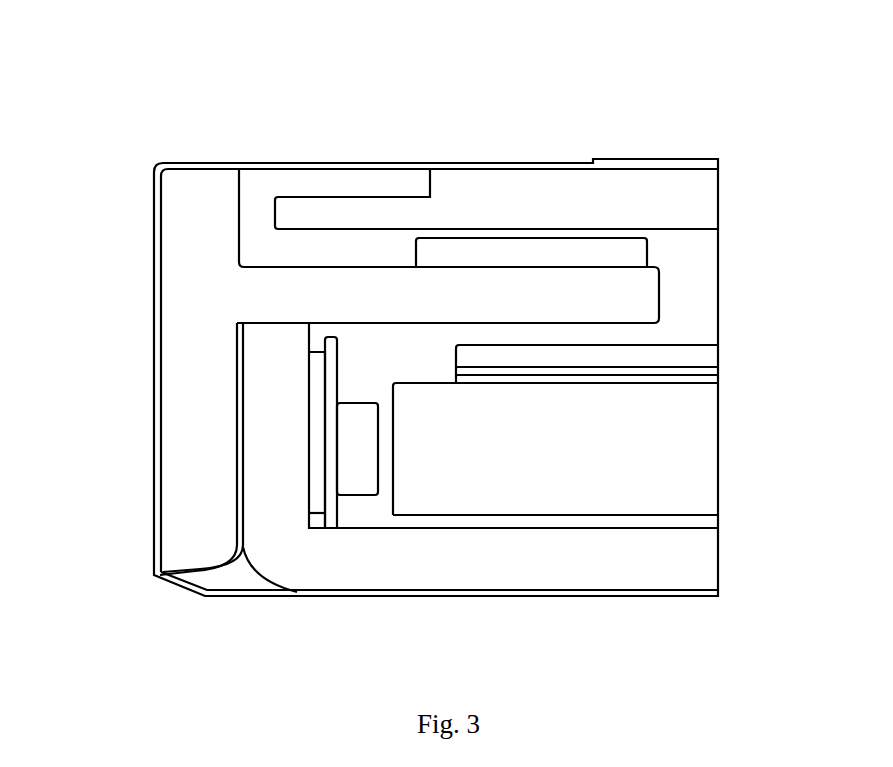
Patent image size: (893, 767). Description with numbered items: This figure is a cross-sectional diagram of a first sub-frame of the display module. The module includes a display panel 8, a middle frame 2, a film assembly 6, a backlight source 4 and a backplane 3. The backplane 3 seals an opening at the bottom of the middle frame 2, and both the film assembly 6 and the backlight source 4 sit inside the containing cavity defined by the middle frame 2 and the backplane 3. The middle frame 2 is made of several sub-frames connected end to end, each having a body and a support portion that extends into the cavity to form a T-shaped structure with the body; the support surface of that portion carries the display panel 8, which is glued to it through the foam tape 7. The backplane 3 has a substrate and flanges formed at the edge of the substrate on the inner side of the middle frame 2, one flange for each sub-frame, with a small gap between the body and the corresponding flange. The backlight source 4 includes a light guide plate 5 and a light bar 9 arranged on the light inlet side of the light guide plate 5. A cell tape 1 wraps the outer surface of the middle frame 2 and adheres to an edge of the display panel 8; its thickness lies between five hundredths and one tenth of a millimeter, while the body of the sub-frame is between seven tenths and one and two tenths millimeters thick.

The cell tape 1 is at (239, 180).
The middle frame 2 is at (207, 513).
The backplane 3 is at (280, 537).
The backlight source 4 is at (623, 390).
The light guide plate 5 is at (582, 465).
The film assembly 6 is at (602, 367).
The foam tape 7 is at (578, 257).
The display panel 8 is at (642, 199).
The light bar 9 is at (350, 453).